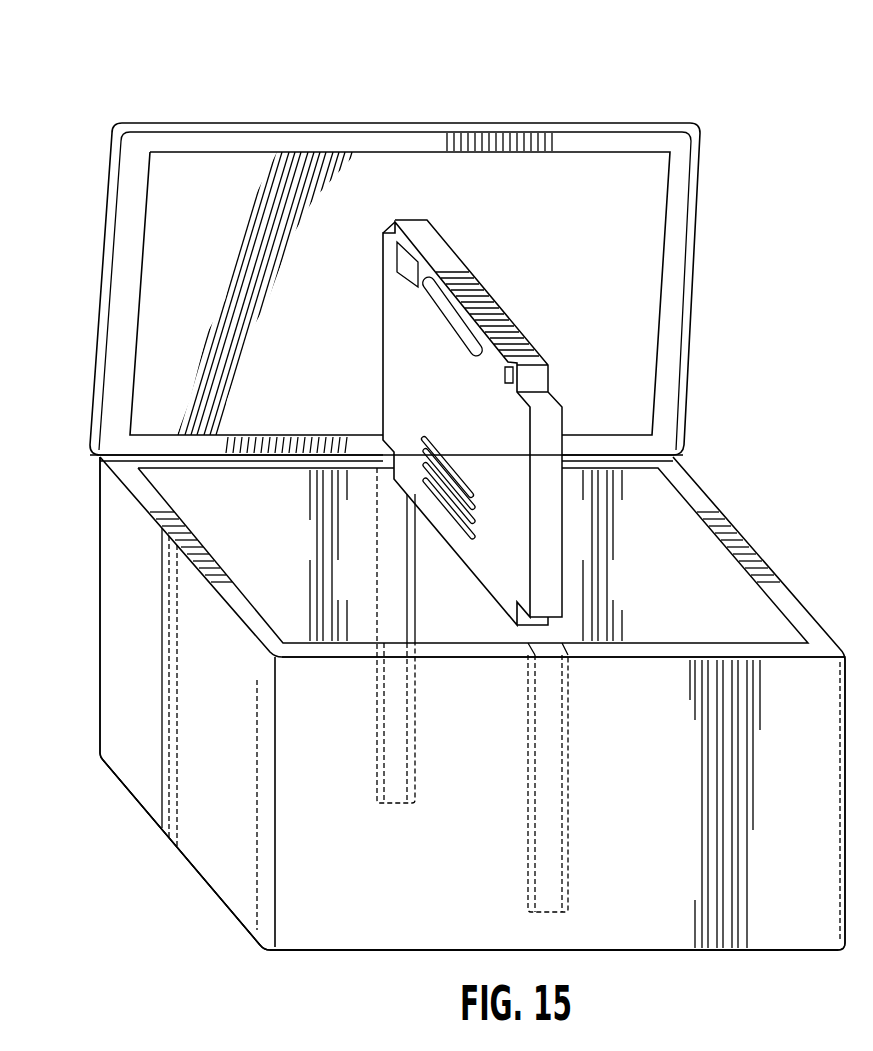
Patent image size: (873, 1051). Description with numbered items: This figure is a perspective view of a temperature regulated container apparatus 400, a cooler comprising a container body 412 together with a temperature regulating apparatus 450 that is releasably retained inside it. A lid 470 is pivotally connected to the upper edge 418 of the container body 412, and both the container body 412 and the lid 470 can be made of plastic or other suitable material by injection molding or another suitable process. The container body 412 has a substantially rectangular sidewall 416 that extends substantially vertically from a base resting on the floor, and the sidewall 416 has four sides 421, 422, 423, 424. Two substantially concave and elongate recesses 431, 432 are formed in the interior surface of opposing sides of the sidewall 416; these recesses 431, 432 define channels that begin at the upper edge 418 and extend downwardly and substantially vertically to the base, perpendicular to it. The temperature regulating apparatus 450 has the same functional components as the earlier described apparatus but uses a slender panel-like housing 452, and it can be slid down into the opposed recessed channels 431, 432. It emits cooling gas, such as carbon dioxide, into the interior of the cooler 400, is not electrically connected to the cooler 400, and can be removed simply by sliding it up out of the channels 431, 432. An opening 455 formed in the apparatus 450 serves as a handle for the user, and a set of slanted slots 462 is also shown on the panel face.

The container apparatus 400 is at (76, 122).
The container body 412 is at (90, 633).
The sidewall 416 is at (265, 852).
The upper edge 418 is at (627, 658).
The side 421 is at (618, 887).
The side 422 is at (603, 513).
The side 423 is at (130, 757).
The side 424 is at (713, 568).
The recess 431 is at (547, 825).
The recess 432 is at (392, 568).
The temperature regulating apparatus 450 is at (506, 366).
The housing 452 is at (400, 206).
The opening 455 is at (448, 317).
The vent ribs 462 is at (424, 462).
The lid 470 is at (603, 172).